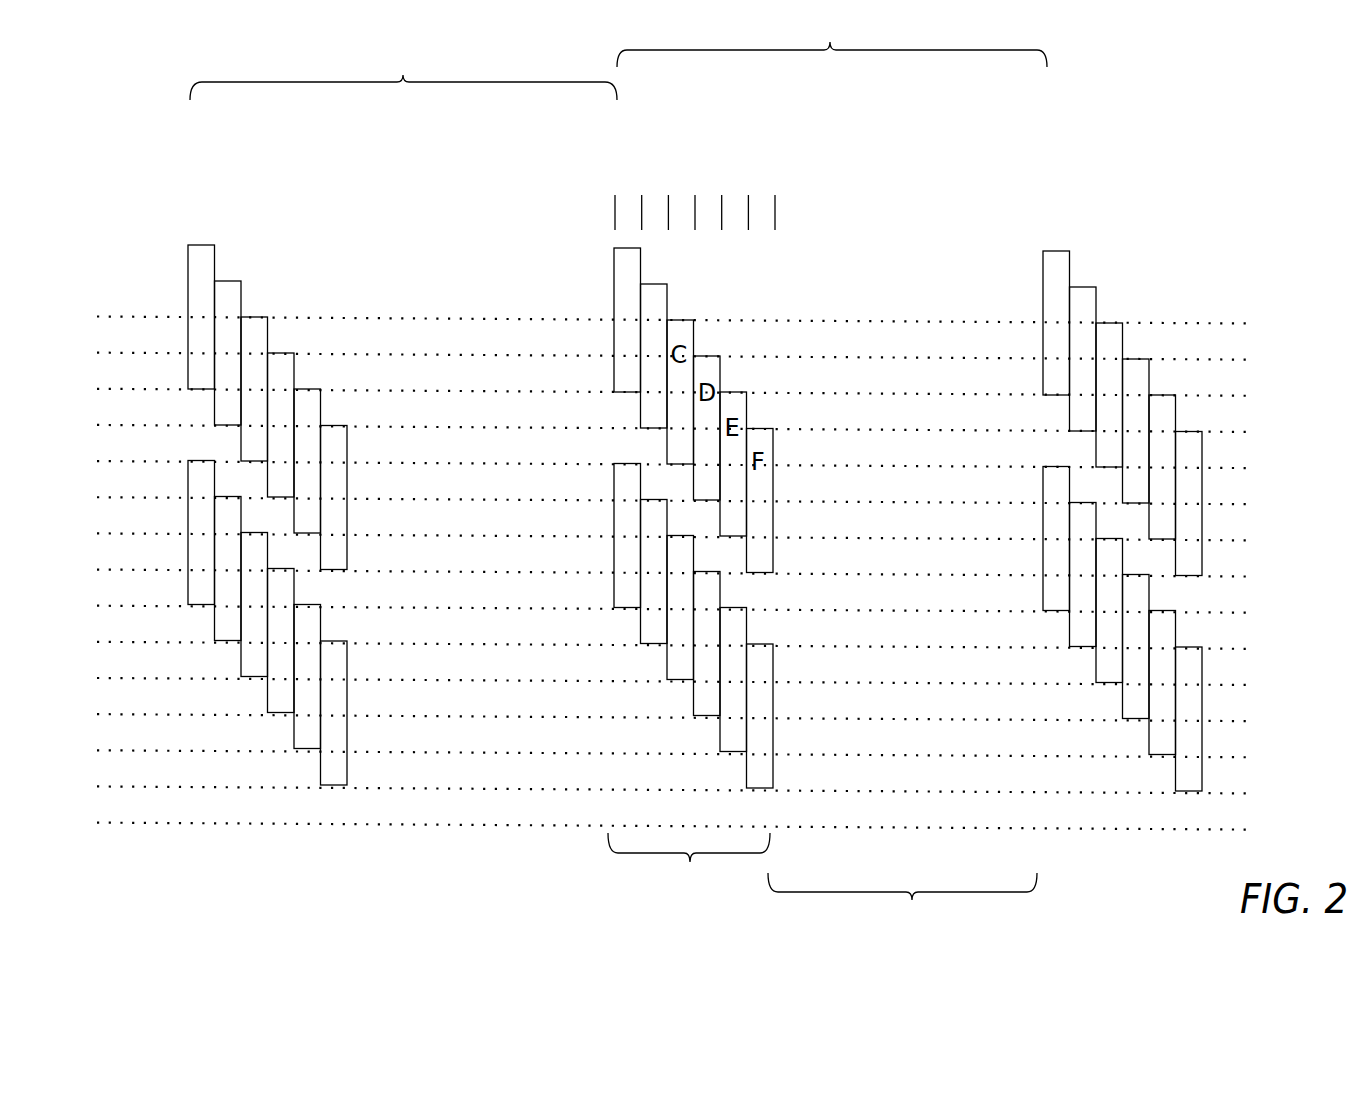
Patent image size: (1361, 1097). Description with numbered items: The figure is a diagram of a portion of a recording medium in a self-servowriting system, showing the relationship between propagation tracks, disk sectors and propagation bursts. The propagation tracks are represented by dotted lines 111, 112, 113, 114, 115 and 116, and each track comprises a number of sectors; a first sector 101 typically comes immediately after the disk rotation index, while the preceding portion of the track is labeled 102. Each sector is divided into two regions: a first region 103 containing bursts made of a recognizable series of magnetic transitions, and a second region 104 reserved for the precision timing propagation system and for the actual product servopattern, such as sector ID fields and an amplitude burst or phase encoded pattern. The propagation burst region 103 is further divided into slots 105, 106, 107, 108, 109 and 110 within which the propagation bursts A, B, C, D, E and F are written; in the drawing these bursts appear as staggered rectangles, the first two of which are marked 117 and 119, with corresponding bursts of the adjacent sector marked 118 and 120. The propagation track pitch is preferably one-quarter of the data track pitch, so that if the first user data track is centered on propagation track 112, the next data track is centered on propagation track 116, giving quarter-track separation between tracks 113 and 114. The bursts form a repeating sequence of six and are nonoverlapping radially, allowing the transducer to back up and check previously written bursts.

The first sector 101 is at (832, 46).
The last sector 102 is at (402, 411).
The first region 103 is at (689, 866).
The second region 104 is at (902, 904).
The slot 105 is at (628, 197).
The slot 106 is at (657, 197).
The slot 107 is at (685, 197).
The slot 108 is at (710, 197).
The slot 109 is at (738, 197).
The slot 110 is at (762, 230).
The propagation track 111 is at (1257, 324).
The propagation track 112 is at (1257, 360).
The propagation track 113 is at (1257, 396).
The propagation track 114 is at (1255, 433).
The propagation track 115 is at (1255, 468).
The propagation track 116 is at (1255, 503).
The servo burst A 117 is at (618, 302).
The servo burst of adjacent sector 118 is at (1047, 272).
The servo burst B 119 is at (665, 300).
The servo burst of adjacent sector 120 is at (1092, 303).